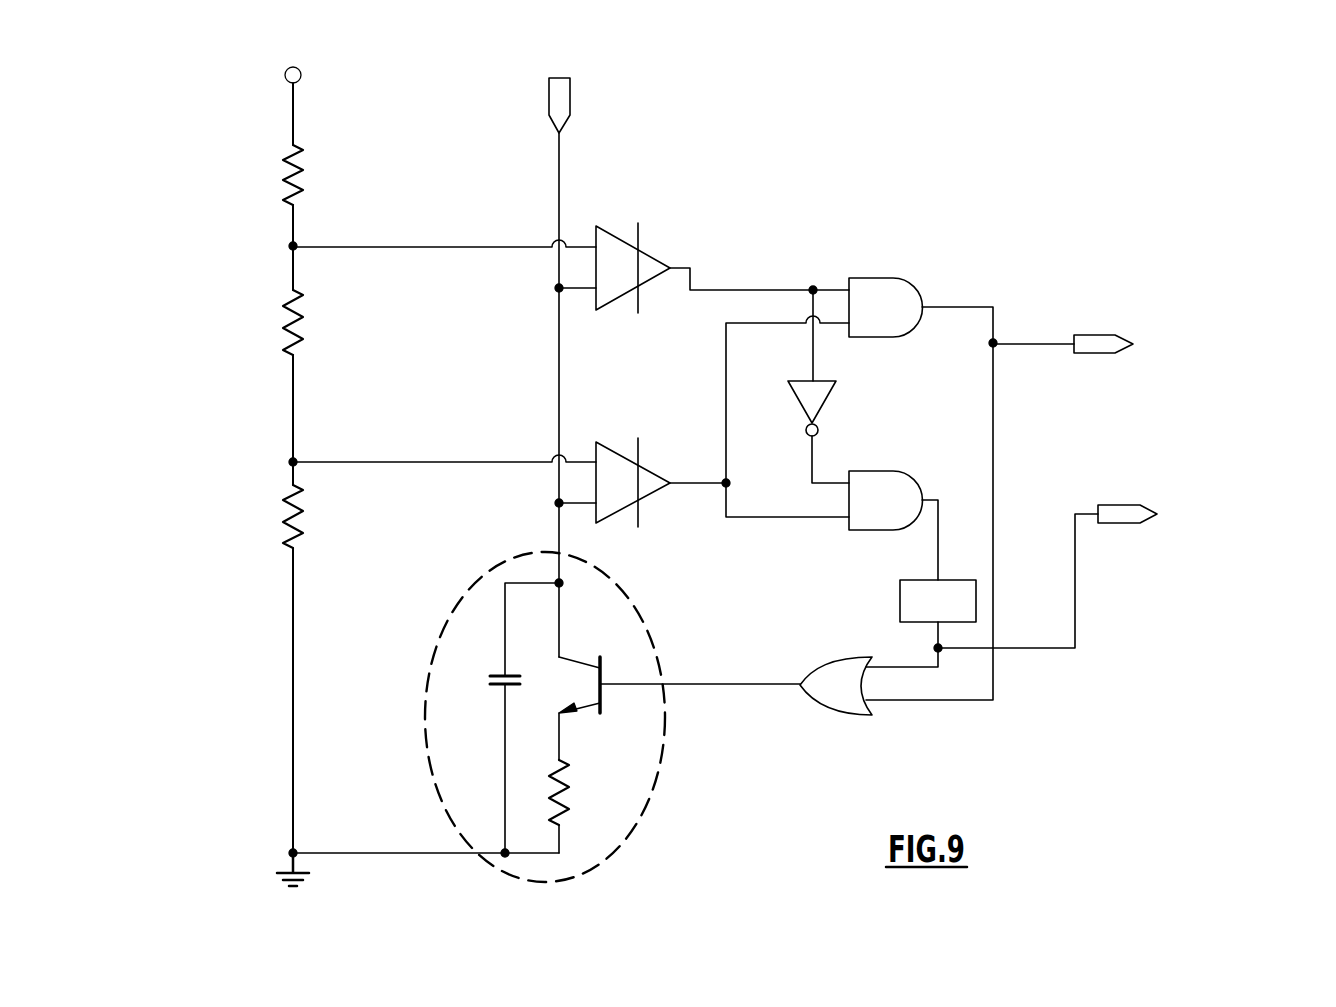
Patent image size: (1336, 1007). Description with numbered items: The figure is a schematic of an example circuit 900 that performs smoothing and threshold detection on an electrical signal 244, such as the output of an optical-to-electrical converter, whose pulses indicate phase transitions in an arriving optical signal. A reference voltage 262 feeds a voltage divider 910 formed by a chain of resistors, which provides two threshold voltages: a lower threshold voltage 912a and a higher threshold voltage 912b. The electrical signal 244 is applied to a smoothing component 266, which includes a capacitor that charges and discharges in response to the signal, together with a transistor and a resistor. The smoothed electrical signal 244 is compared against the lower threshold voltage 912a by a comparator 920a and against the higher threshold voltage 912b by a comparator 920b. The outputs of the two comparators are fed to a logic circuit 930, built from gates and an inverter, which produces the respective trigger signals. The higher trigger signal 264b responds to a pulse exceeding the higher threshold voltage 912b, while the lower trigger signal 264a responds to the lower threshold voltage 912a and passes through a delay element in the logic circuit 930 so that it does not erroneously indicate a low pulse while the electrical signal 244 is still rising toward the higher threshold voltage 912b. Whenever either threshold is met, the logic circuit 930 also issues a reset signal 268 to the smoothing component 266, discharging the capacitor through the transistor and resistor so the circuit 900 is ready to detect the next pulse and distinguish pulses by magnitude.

The circuit 900 is at (1088, 131).
The reference voltage 262 is at (301, 75).
The voltage divider 910 is at (230, 132).
The higher threshold voltage 912b is at (390, 187).
The lower threshold voltage 912a is at (390, 402).
The electrical signal 244 is at (560, 158).
The comparator 920b is at (655, 258).
The comparator 920a is at (650, 497).
The logic circuit 930 is at (1007, 258).
The higher trigger signal 264b is at (1187, 315).
The lower trigger signal 264a is at (1212, 483).
The reset signal 268 is at (725, 684).
The smoothing component 266 is at (620, 847).